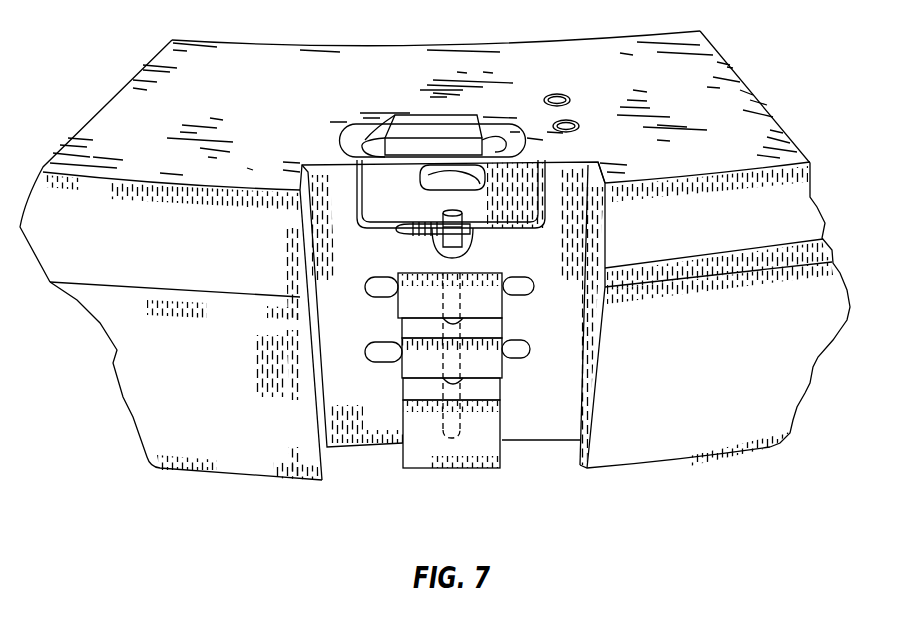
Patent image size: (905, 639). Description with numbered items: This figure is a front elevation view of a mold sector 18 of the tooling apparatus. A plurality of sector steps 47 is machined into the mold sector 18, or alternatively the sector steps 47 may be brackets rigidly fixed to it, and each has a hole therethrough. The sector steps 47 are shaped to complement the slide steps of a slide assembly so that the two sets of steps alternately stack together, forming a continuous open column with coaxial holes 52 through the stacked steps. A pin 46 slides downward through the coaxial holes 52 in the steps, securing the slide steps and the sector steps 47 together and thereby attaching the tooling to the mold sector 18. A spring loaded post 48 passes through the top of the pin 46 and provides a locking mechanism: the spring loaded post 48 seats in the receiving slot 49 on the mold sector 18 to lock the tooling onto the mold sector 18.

The mold sector 18 is at (378, 65).
The pin 46 is at (463, 235).
The sector steps 47 is at (413, 300).
The spring loaded post 48 is at (397, 232).
The receiving slot 49 is at (437, 182).
The holes 52 is at (468, 240).